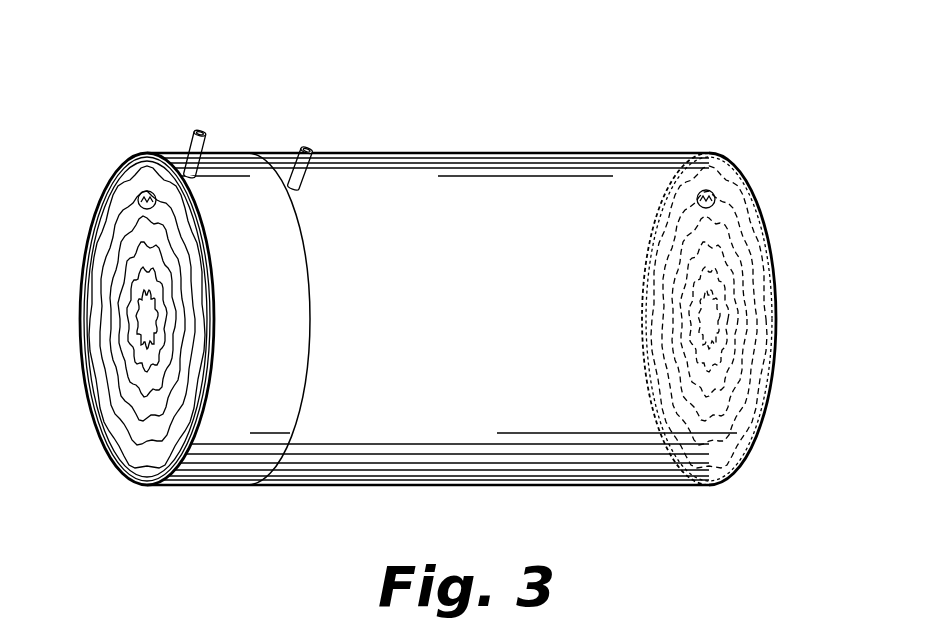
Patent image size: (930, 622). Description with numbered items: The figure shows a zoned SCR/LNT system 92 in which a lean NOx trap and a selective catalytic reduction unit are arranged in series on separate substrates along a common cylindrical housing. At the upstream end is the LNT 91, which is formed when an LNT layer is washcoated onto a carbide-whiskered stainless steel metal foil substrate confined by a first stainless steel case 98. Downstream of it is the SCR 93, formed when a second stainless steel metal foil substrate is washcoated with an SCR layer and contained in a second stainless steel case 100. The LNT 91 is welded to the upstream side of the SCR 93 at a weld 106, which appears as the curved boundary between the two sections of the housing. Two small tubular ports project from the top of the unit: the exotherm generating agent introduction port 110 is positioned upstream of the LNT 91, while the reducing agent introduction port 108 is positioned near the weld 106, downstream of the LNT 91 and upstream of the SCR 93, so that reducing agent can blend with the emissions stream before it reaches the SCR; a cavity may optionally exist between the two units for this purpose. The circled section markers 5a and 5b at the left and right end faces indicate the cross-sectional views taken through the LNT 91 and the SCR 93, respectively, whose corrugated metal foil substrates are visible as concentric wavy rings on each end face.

The exhaust aftertreatment device 92 is at (710, 58).
The LNT 91 is at (228, 206).
The SCR 93 is at (513, 208).
The first stainless steel case 98 is at (224, 456).
The second stainless steel case 100 is at (468, 434).
The weld 106 is at (247, 486).
The reducing agent introduction port 108 is at (312, 140).
The exotherm generating agent introduction port 110 is at (205, 118).
The section view 5a is at (146, 191).
The section view 5b is at (707, 190).